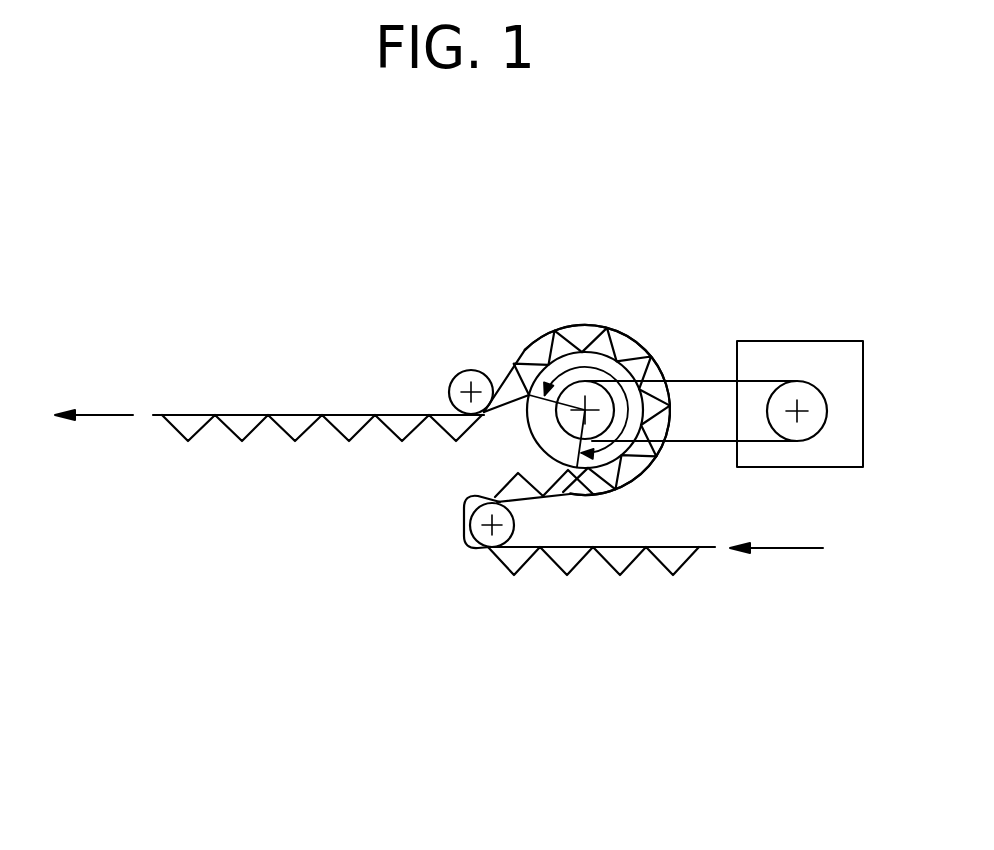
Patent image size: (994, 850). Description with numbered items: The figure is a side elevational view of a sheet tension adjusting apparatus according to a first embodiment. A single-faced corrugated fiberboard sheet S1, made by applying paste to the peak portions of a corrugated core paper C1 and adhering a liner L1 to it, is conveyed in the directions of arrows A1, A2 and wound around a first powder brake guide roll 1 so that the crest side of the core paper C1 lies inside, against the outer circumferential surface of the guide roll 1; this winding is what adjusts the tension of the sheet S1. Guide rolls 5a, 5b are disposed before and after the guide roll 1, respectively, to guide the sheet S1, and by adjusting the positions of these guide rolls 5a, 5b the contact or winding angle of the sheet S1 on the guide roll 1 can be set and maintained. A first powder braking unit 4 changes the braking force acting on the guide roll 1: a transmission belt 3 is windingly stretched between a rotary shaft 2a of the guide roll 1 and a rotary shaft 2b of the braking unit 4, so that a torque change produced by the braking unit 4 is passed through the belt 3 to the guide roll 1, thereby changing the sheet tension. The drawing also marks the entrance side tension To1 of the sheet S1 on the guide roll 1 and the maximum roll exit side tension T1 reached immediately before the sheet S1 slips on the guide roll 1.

The first powder brake guide roll 1 is at (553, 329).
The liner L1 is at (634, 340).
The rotary shaft of the guide roll 2a is at (548, 419).
The transmission belt 3 is at (693, 380).
The first powder braking unit 4 is at (812, 341).
The rotary shaft of the first powder braking unit 2b is at (805, 437).
The guide roll 5b is at (477, 371).
The guide roll 5a is at (488, 549).
The maximum roll exit side tension T1 is at (358, 413).
The corrugated core paper C1 is at (628, 577).
The entrance side tension To1 is at (527, 503).
The single-faced corrugated fiberboard sheet S1 is at (557, 575).
The conveyance direction arrow A1 is at (795, 551).
The conveyance direction arrow A2 is at (112, 413).